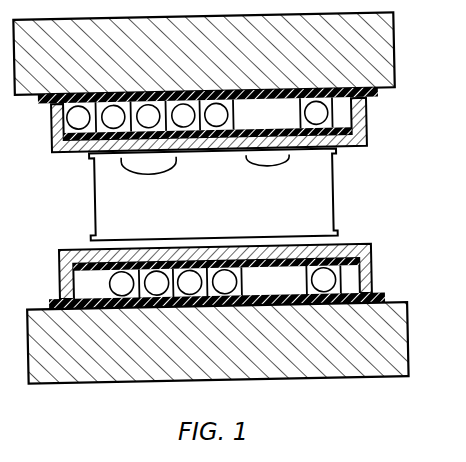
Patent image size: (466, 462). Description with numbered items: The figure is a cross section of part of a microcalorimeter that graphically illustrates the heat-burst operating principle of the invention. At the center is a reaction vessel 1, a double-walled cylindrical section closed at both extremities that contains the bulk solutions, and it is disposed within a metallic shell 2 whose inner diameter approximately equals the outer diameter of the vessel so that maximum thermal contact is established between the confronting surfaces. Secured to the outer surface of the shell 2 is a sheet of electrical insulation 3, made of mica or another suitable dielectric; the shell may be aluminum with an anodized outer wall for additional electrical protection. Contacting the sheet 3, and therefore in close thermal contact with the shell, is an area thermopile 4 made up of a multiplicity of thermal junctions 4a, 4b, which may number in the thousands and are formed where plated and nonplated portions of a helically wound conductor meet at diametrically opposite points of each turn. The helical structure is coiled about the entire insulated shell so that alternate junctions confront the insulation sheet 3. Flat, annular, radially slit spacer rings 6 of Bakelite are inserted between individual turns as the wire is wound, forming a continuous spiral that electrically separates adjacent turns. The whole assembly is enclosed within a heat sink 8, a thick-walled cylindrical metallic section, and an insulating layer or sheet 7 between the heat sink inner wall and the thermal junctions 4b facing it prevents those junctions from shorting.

The reaction vessel 1 is at (108, 203).
The metallic shell 2 is at (361, 140).
The sheet of electrical insulation 3 is at (78, 138).
The area thermopile 4 is at (200, 126).
The thermal junctions 4a is at (182, 122).
The thermal junctions 4b is at (172, 99).
The spacer rings 6 is at (207, 280).
The insulating layer or sheet 7 is at (375, 99).
The heat sink 8 is at (386, 42).